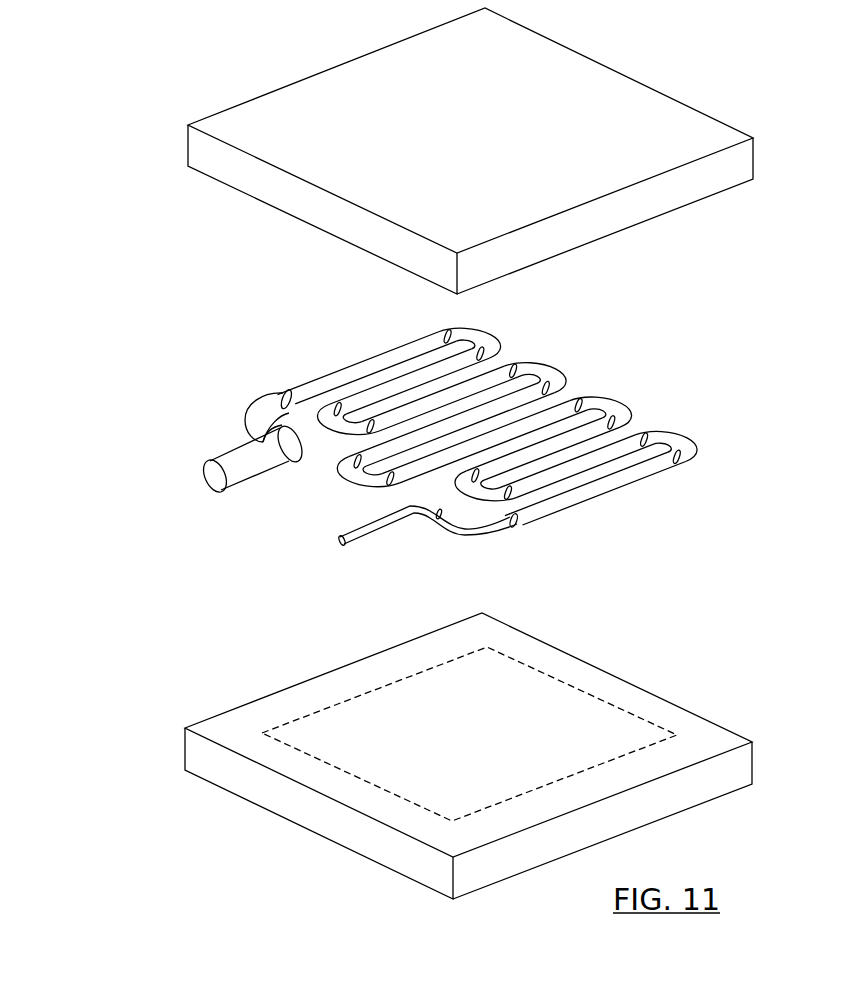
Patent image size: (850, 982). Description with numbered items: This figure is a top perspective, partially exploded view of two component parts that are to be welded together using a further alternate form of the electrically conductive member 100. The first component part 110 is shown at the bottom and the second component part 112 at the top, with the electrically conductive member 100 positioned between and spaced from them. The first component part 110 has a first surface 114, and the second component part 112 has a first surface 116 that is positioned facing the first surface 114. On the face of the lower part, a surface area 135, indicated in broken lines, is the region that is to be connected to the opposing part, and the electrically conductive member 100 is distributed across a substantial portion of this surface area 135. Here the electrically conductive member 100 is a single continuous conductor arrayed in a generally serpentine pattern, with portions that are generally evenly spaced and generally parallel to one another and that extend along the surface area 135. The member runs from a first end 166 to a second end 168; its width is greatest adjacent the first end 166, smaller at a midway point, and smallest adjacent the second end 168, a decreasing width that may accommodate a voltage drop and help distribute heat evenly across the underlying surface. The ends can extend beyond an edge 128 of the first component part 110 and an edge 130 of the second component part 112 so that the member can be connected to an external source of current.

The electrically conductive member 100 is at (687, 508).
The first component part 110 is at (690, 802).
The second component part 112 is at (509, 151).
The first surface 114 is at (486, 759).
The first surface 116 is at (734, 192).
The edge 128 is at (287, 817).
The edge 130 is at (328, 200).
The surface area 135 is at (323, 710).
The first end 166 is at (201, 473).
The second end 168 is at (341, 540).